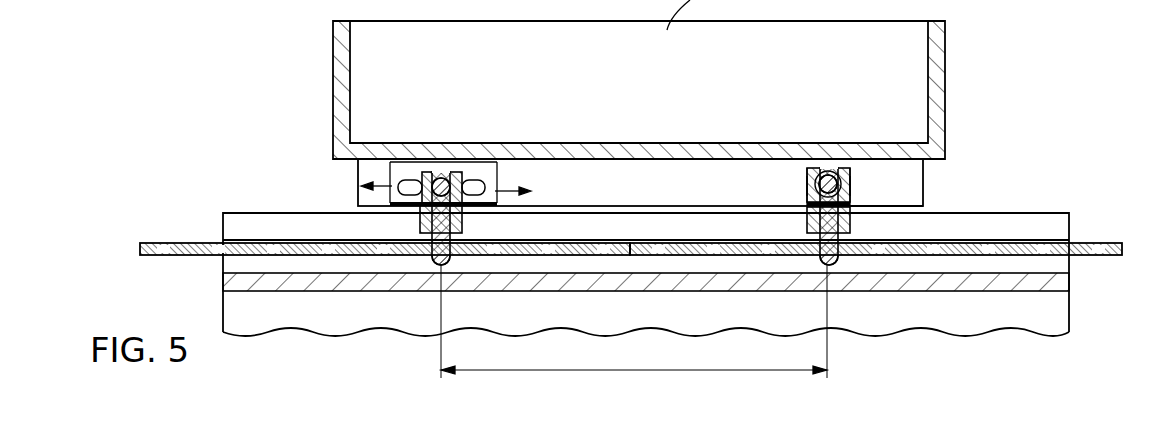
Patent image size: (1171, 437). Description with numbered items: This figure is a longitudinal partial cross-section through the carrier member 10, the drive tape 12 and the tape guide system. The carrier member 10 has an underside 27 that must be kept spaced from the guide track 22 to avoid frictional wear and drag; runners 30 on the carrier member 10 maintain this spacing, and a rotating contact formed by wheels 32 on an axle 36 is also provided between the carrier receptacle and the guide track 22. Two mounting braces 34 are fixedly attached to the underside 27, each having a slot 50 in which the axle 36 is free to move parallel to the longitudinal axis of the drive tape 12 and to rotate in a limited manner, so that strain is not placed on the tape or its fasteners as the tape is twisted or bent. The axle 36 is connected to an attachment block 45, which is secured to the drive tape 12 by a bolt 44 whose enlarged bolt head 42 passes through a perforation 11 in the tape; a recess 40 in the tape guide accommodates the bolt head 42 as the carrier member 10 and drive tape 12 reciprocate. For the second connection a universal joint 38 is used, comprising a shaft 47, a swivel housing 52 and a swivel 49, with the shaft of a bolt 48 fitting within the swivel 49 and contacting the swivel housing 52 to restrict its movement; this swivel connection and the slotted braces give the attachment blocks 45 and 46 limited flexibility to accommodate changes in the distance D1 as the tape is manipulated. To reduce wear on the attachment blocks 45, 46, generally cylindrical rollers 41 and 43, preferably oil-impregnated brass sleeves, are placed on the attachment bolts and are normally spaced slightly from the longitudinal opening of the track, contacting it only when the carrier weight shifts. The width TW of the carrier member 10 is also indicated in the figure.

The carrier member 10 is at (993, 41).
The tray width TW is at (231, 0).
The runners 30 is at (641, 173).
The underside 27 is at (948, 170).
The mounting braces 34 is at (372, 168).
The axle 36 is at (434, 180).
The wheels 32 is at (445, 172).
The attachment block 45 is at (385, 195).
The slots 50 is at (500, 188).
The roller 41 is at (462, 222).
The bolt head 42 is at (444, 268).
The bolt 44 is at (428, 247).
The universal joint 38 is at (816, 170).
The shaft 47 is at (826, 168).
The bolt 48 is at (838, 170).
The swivel housing 52 is at (845, 192).
The swivel 49 is at (801, 196).
The roller 43 is at (807, 222).
The attachment block 46 is at (872, 198).
The guide track 22 is at (1020, 240).
The recess 40 is at (1060, 267).
The perforation 11 is at (162, 244).
The drive tape 12 is at (1090, 243).
The distance D1 is at (612, 370).